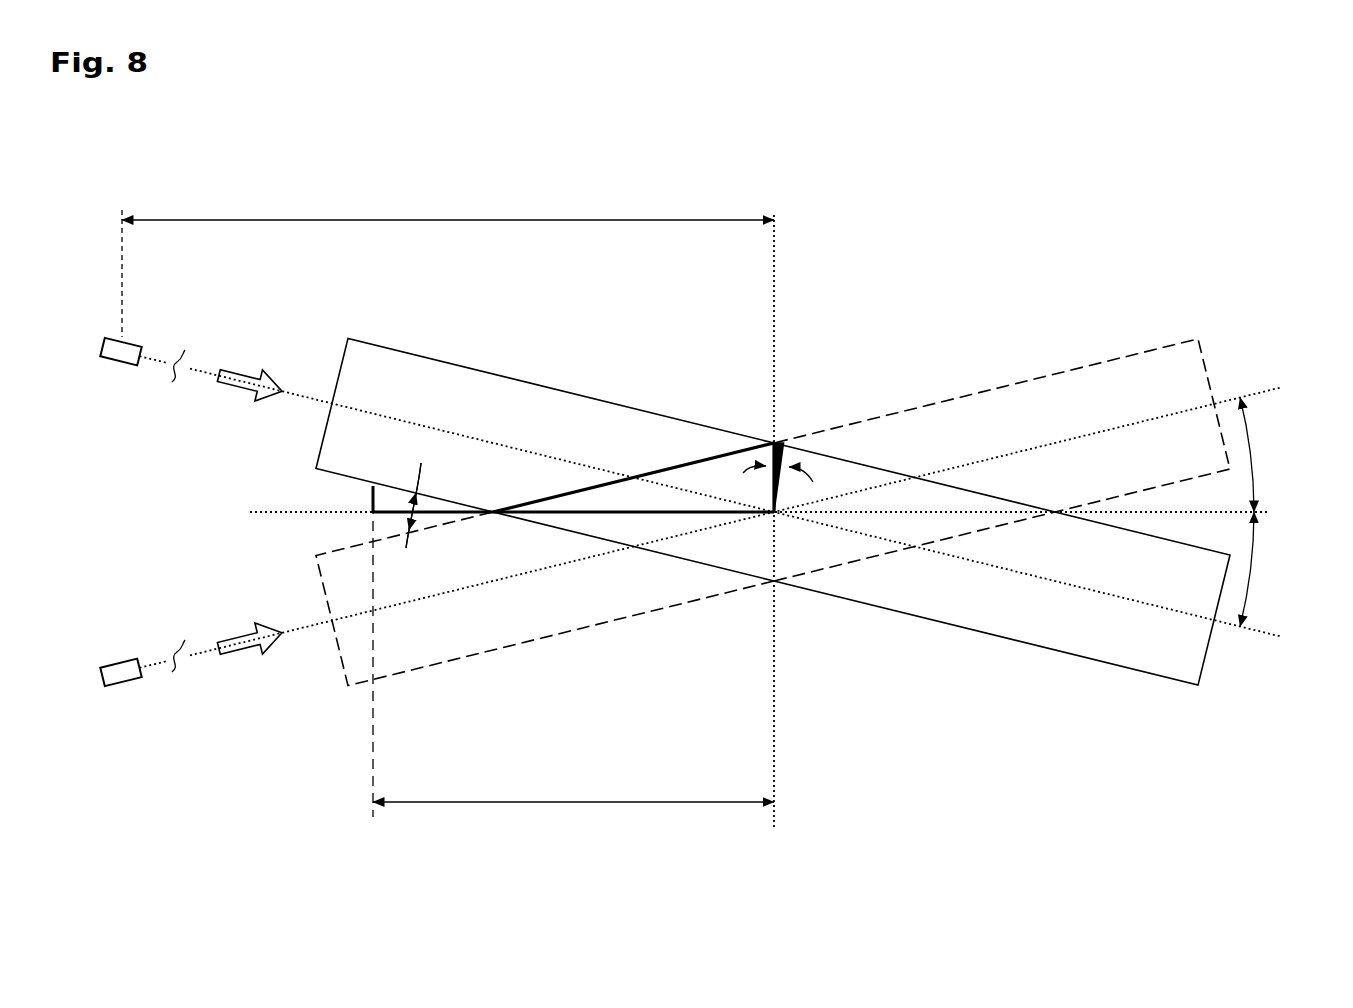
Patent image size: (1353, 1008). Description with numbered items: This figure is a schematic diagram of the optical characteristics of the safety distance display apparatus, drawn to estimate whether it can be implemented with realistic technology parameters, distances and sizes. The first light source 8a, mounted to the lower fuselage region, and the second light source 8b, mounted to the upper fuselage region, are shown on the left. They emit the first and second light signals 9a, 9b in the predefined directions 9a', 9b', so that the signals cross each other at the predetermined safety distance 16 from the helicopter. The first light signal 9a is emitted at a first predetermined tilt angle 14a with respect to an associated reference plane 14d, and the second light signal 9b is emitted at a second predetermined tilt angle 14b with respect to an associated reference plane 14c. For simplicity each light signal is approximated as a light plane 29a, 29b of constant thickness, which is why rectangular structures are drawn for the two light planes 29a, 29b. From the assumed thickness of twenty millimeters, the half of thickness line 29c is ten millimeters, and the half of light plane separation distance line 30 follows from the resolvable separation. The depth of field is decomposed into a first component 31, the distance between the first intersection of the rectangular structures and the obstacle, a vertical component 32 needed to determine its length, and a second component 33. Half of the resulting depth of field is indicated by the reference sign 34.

The first light source 8a is at (116, 657).
The second light source 8b is at (128, 343).
The first light signal 9a is at (1002, 421).
The second light signal 9b is at (1002, 597).
The predefined direction 9a' is at (735, 567).
The predefined direction 9b' is at (735, 460).
The first predetermined tilt angle 14a is at (1252, 452).
The second predetermined tilt angle 14b is at (1250, 568).
The reference plane 14c is at (290, 508).
The reference plane 14d is at (290, 508).
The predetermined safety distance 16 is at (447, 218).
The light plane 29a is at (508, 650).
The light plane 29b is at (511, 378).
The half of thickness line 29c is at (800, 488).
The half of light plane separation distance line 30 is at (371, 498).
The first component of the depth of field 31 is at (693, 514).
The vertical component 32 is at (770, 490).
The second component of the depth of field 33 is at (373, 518).
The half of the depth of field 34 is at (571, 805).